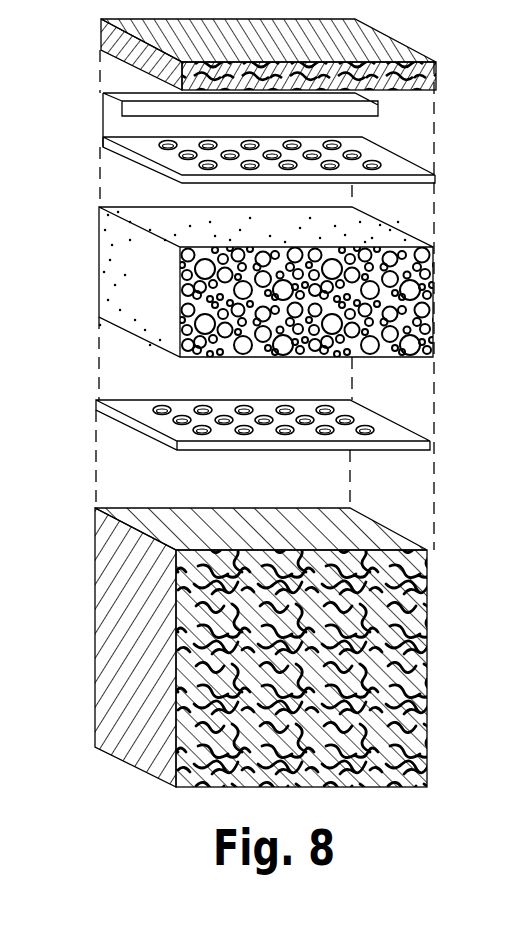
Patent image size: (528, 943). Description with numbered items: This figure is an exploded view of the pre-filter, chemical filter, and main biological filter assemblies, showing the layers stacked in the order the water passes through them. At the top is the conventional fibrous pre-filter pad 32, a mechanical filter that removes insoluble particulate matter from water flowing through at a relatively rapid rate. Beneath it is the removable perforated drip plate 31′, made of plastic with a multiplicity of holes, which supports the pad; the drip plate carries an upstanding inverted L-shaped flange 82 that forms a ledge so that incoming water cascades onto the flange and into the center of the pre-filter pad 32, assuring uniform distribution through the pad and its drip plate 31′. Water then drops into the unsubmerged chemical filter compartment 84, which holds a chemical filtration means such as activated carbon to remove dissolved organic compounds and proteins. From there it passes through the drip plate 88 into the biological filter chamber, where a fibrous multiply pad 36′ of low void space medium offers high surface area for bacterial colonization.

The fibrous pre-filter pad 32 is at (437, 64).
The upstanding inverted L-shaped flange 82 is at (101, 117).
The perforated drip plate 31′ is at (431, 165).
The chemical filter compartment 84 is at (442, 332).
The drip plate 88 is at (440, 424).
The multiply pad 36′ is at (427, 672).